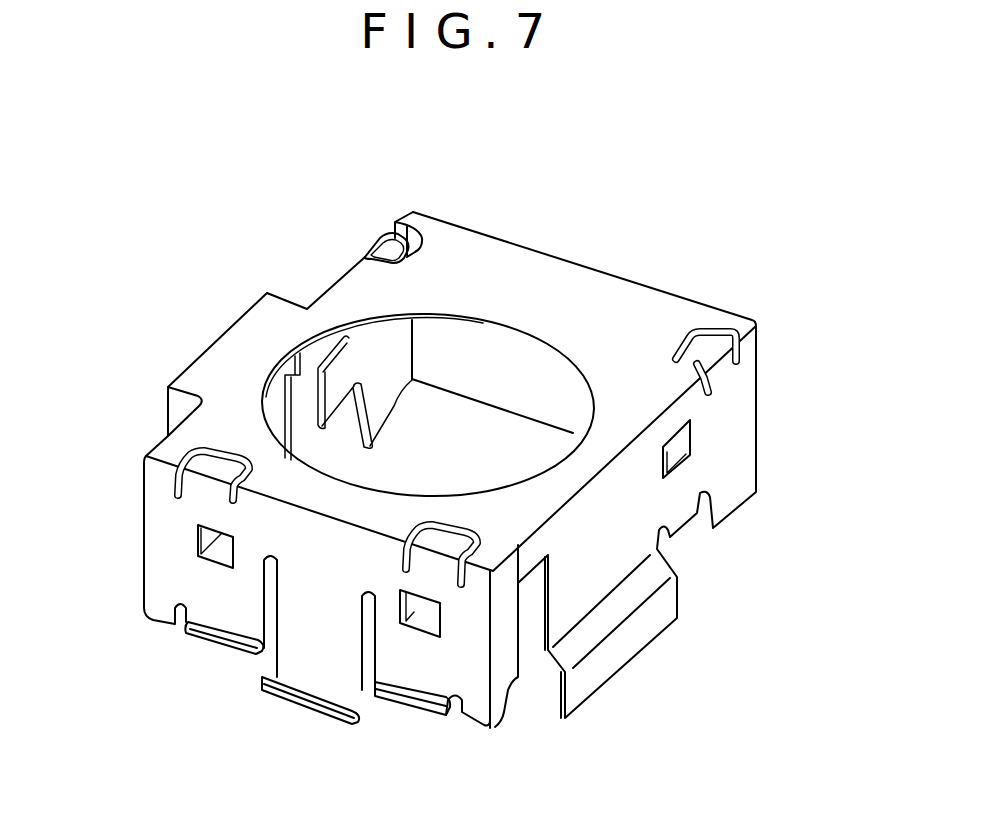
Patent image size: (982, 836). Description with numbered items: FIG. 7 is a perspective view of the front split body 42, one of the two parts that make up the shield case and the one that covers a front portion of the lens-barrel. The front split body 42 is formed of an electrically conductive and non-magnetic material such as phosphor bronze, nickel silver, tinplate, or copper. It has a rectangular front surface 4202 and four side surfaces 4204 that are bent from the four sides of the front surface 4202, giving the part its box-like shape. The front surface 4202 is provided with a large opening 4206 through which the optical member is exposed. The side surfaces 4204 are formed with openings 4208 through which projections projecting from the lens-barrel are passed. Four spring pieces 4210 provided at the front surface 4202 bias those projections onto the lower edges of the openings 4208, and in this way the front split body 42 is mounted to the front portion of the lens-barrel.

The front split body 42 is at (582, 232).
The front surface 4202 is at (628, 307).
The side surfaces 4204 is at (733, 413).
The opening 4206 is at (467, 341).
The openings 4208 is at (212, 563).
The spring pieces 4210 is at (386, 250).